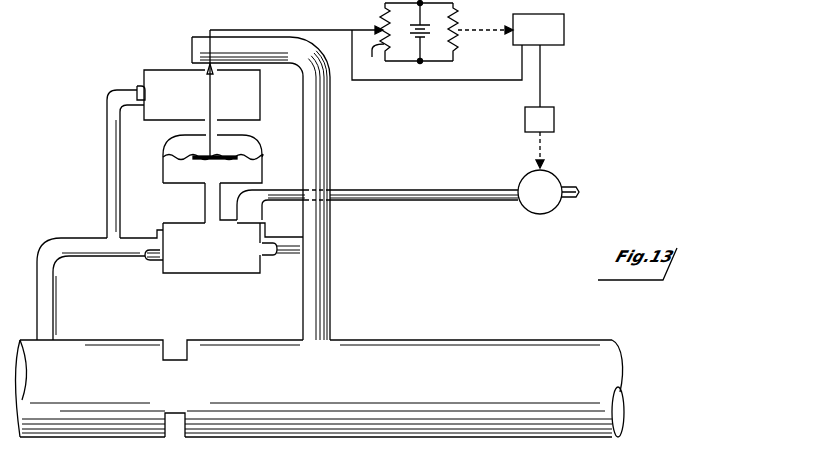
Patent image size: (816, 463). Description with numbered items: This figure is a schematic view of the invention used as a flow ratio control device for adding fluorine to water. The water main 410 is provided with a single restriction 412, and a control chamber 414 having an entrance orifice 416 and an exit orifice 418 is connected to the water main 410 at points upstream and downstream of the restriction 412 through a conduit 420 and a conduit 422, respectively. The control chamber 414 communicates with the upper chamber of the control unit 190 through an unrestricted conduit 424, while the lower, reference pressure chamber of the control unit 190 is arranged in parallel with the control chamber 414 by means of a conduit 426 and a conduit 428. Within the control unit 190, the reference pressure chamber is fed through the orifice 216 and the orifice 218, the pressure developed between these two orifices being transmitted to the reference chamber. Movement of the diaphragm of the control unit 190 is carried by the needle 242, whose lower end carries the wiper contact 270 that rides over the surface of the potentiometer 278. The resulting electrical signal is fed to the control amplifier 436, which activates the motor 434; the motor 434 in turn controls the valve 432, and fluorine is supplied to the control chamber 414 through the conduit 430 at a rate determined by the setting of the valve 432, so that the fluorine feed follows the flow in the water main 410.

The control unit 190 is at (159, 149).
The orifice 216 is at (137, 86).
The orifice 218 is at (193, 55).
The needle 242 is at (210, 100).
The wiper contact 270 is at (380, 28).
The potentiometer 278 is at (372, 60).
The water main 410 is at (240, 440).
The restriction 412 is at (183, 408).
The control chamber 414 is at (204, 273).
The entrance orifice 416 is at (150, 254).
The exit orifice 418 is at (270, 250).
The conduit 420 is at (56, 304).
The conduit 422 is at (331, 284).
The unrestricted conduit 424 is at (205, 210).
The conduit 426 is at (107, 186).
The conduit 428 is at (331, 166).
The conduit 430 is at (281, 190).
The valve 432 is at (558, 177).
The motor 434 is at (554, 118).
The control amplifier 436 is at (565, 23).